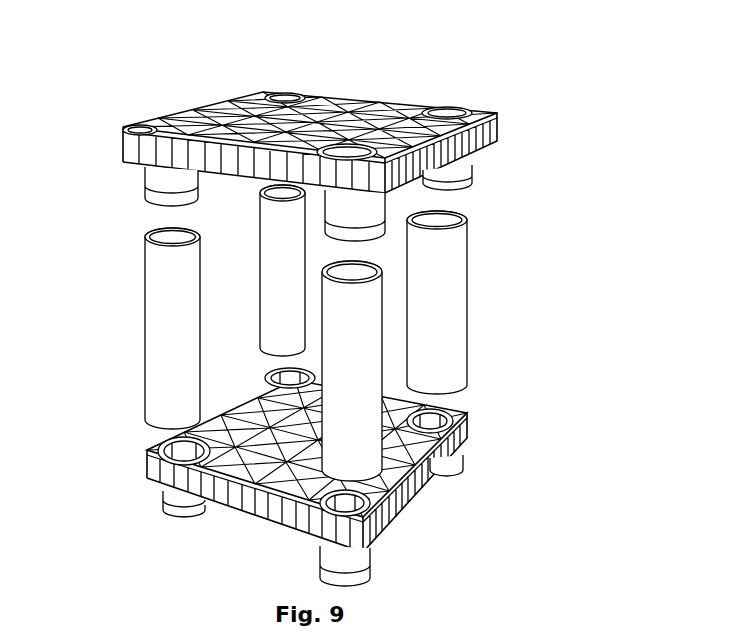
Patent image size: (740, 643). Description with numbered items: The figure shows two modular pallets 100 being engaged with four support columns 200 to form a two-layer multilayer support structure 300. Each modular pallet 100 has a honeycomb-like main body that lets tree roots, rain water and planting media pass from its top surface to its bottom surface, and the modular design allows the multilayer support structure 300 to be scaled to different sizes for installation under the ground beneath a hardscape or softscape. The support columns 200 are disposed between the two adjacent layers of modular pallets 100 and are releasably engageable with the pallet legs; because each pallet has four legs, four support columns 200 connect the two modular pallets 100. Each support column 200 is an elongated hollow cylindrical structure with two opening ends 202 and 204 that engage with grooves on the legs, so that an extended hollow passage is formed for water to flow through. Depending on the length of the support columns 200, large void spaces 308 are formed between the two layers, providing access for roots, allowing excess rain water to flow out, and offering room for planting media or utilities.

The modular pallet 100 is at (413, 102).
The support column 200 is at (261, 333).
The opening end 202 is at (263, 351).
The opening end 204 is at (262, 197).
The multilayer support structure 300 is at (309, 311).
The void space 308 is at (313, 293).